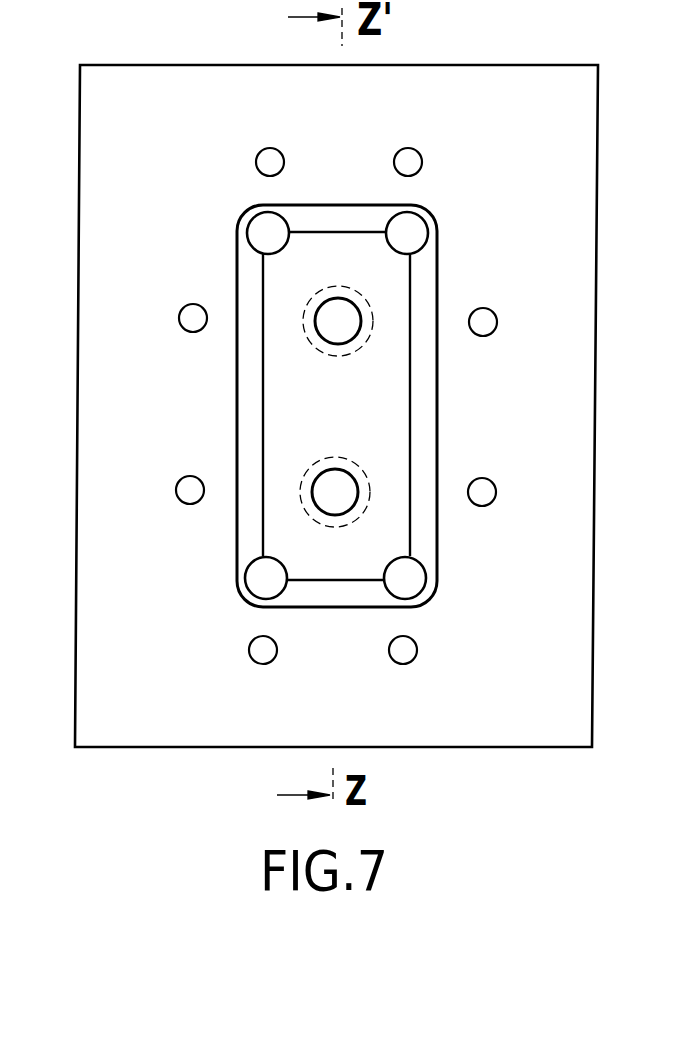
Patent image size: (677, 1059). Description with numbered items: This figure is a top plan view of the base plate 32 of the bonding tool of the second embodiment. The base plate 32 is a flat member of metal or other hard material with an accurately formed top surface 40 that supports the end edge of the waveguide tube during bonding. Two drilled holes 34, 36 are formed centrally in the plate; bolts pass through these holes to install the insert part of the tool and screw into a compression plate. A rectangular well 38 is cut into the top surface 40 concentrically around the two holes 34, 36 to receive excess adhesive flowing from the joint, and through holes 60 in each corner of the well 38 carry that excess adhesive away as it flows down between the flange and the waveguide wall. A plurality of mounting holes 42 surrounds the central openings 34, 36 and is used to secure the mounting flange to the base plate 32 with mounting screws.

The base plate 32 is at (596, 524).
The drilled hole 34 is at (356, 334).
The drilled hole 36 is at (345, 470).
The rectangular well 38 is at (423, 385).
The top surface 40 is at (575, 677).
The mounting holes 42 is at (284, 162).
The through holes 60 is at (287, 250).